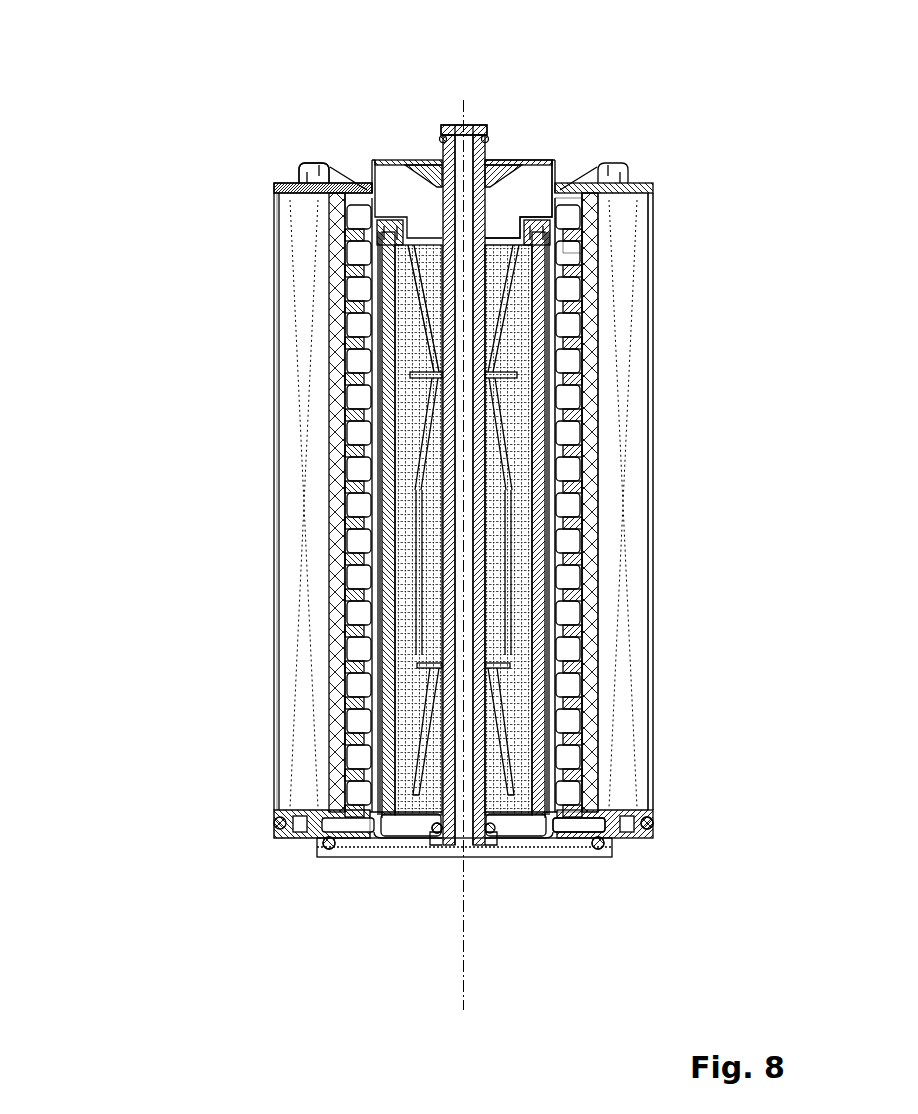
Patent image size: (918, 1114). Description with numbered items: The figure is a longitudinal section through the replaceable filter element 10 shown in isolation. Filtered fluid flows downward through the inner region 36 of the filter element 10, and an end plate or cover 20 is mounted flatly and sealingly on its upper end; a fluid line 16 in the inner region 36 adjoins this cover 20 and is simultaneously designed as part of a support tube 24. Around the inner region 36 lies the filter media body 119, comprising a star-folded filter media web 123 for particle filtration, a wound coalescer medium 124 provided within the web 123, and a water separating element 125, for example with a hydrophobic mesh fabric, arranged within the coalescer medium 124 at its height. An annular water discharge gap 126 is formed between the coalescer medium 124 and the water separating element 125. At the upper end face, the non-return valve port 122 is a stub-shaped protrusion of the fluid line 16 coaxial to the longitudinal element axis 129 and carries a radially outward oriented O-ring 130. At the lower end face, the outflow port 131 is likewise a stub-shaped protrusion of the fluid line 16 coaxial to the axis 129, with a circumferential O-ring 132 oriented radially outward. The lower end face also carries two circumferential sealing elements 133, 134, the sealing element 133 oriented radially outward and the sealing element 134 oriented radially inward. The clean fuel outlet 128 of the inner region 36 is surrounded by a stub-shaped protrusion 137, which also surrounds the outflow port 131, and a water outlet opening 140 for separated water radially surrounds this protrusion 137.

The filter element 10 is at (134, 130).
The fluid line 16 is at (462, 256).
The end plate or cover 20 is at (305, 186).
The support tube 24 is at (445, 293).
The inner region 36 is at (495, 438).
The filter media body 119 is at (674, 252).
The non-return valve port 122 is at (512, 126).
The star-folded filter media web 123 is at (612, 455).
The wound coalescer medium 124 is at (585, 495).
The water separating element 125 is at (549, 565).
The annular water discharge gap 126 is at (566, 600).
The clean fuel outlet 128 is at (345, 810).
The longitudinal element axis 129 is at (463, 966).
The O-ring 130 is at (440, 136).
The outflow port 131 is at (427, 858).
The O-ring 132 is at (433, 830).
The sealing element 133 is at (655, 820).
The sealing element 134 is at (600, 840).
The stub-shaped protrusion 137 is at (380, 818).
The water outlet opening 140 is at (572, 827).